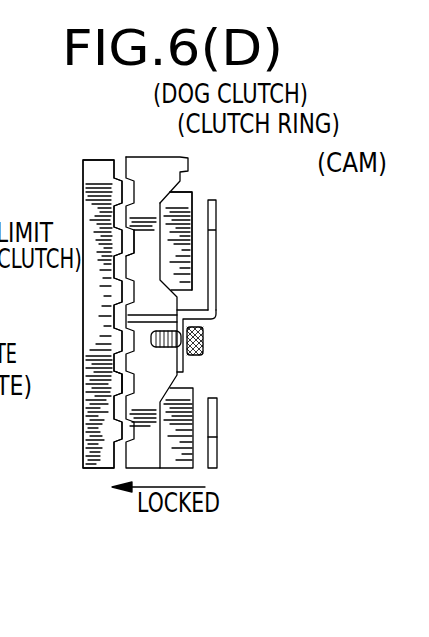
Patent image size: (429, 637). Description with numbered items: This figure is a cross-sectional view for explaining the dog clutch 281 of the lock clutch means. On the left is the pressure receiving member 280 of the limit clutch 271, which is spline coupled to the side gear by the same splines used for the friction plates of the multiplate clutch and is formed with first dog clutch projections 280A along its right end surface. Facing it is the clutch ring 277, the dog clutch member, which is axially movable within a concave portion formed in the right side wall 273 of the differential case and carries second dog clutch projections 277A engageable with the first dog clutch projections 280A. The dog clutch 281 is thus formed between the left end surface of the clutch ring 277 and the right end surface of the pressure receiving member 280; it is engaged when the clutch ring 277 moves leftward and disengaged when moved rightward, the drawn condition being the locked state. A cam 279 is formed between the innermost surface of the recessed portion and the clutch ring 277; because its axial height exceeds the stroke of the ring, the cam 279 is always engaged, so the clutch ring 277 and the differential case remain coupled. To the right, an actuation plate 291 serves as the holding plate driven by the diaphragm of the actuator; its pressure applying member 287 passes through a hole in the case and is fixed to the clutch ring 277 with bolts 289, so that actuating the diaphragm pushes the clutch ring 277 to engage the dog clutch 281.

The pressure receiving member 280 is at (84, 176).
The limit clutch 271 is at (61, 314).
The dog clutch 281 is at (125, 156).
The clutch ring 277 is at (150, 160).
The second dog clutch projections 277A is at (128, 254).
The first dog clutch projections 280A is at (118, 364).
The cam 279 is at (189, 203).
The right side wall 273 is at (241, 218).
The actuation plate 291 is at (215, 258).
The pressure applying member 287 is at (188, 361).
The bolts 289 is at (204, 338).